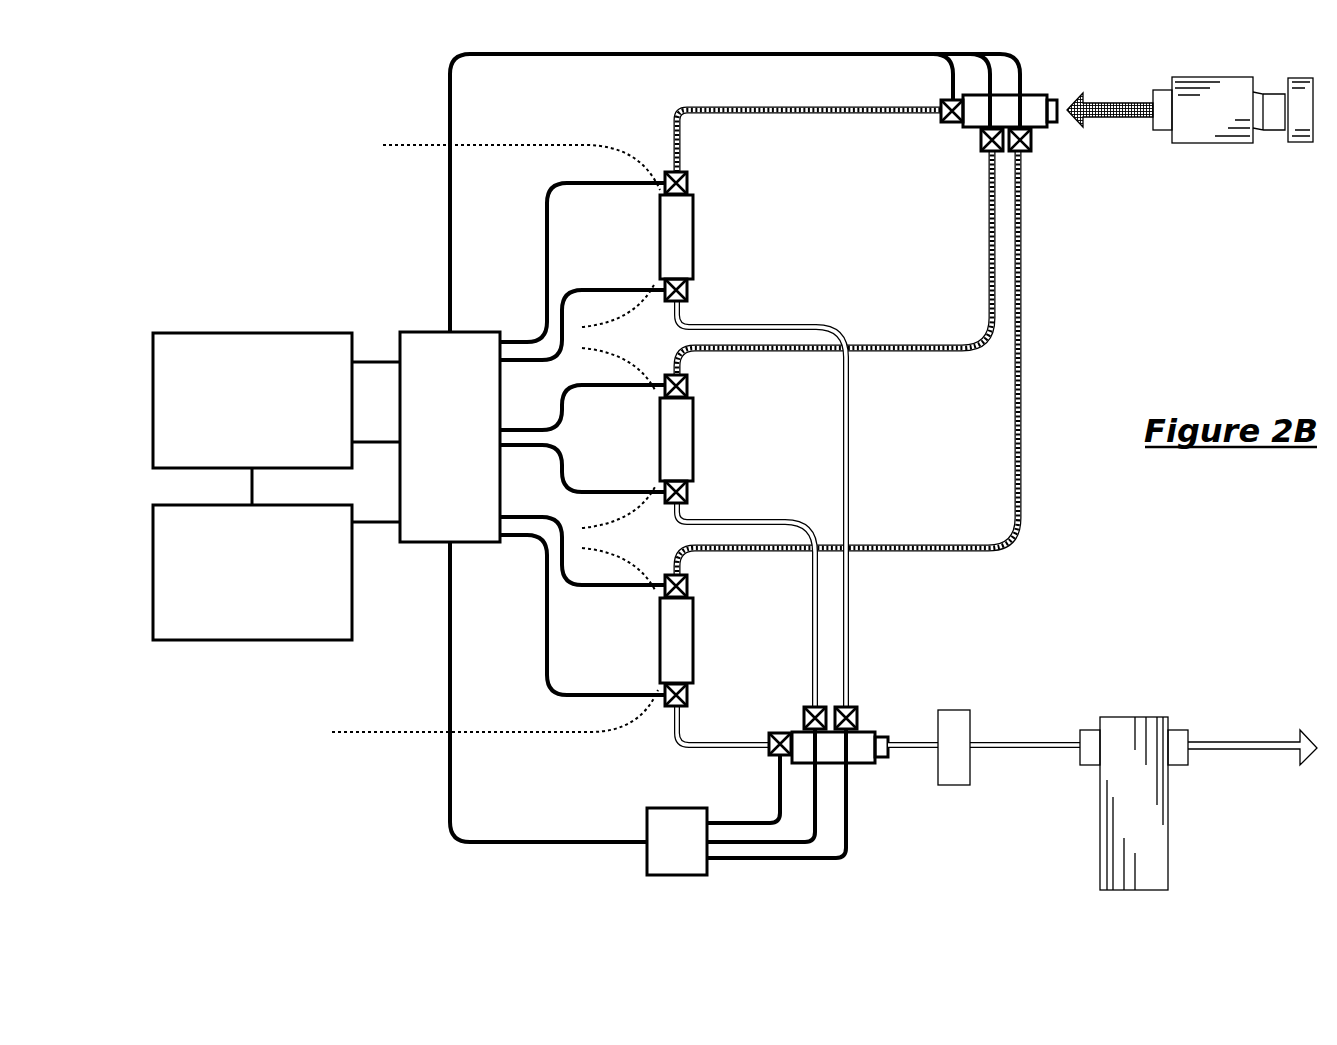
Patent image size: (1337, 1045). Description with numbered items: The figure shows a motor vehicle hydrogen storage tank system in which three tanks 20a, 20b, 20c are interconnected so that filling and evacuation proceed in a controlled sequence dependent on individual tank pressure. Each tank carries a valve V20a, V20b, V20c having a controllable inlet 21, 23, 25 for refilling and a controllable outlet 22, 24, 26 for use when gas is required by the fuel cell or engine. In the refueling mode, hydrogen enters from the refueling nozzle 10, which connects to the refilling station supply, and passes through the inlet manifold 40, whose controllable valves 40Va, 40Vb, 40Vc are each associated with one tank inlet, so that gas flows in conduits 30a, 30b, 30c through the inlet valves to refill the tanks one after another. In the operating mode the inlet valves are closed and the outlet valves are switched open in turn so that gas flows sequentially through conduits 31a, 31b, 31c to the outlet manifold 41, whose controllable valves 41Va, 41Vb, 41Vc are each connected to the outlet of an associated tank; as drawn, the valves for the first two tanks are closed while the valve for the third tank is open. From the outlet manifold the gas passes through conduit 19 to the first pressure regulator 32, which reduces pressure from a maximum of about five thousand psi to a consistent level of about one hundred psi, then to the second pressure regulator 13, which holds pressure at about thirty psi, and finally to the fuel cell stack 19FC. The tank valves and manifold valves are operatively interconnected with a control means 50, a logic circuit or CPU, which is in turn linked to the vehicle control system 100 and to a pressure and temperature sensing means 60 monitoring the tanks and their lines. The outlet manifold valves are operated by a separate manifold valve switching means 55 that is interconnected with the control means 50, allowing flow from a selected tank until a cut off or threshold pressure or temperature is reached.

The refueling nozzle 10 is at (1213, 143).
The second pressure regulator 13 is at (1100, 838).
The conduit 19 is at (1020, 742).
The fuel cell stack 19FC is at (1232, 740).
The tank 20a is at (521, 236).
The tank 20b is at (618, 438).
The tank 20c is at (495, 640).
The controllable inlet 21 is at (687, 183).
The controllable outlet 22 is at (687, 290).
The controllable inlet 23 is at (687, 386).
The controllable outlet 24 is at (687, 492).
The controllable inlet 25 is at (687, 586).
The controllable outlet 26 is at (687, 695).
The conduit 30a is at (812, 115).
The conduit 30b is at (985, 253).
The conduit 30c is at (1027, 253).
The conduit 31a is at (855, 447).
The conduit 31b is at (825, 605).
The conduit 31c is at (675, 743).
The first pressure regulator 32 is at (955, 785).
The inlet manifold 40 is at (1042, 93).
The controllable valve 40Va is at (946, 124).
The controllable valve 40Vb is at (980, 153).
The controllable valve 40Vc is at (1031, 153).
The outlet manifold 41 is at (870, 765).
The controllable valve 41Va is at (860, 717).
The controllable valve 41Vb is at (825, 705).
The controllable valve 41Vc is at (770, 757).
The control means 50 is at (686, 448).
The manifold valve switching means 55 is at (746, 802).
The pressure and temperature sensors 60 is at (252, 640).
The vehicle control system 100 is at (252, 333).
The valve V20a is at (693, 237).
The valve V20b is at (693, 440).
The valve V20c is at (693, 640).